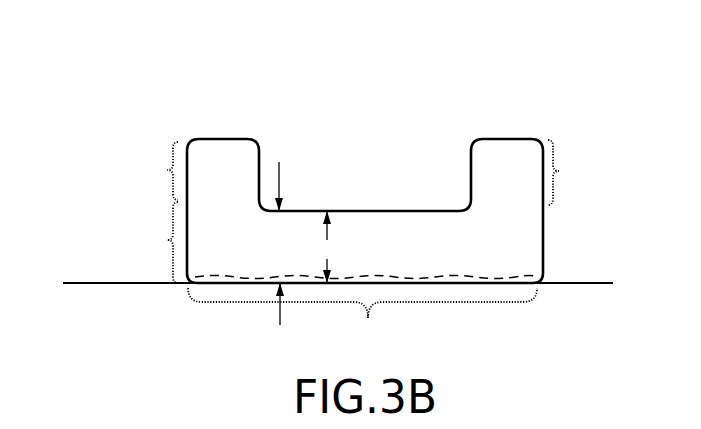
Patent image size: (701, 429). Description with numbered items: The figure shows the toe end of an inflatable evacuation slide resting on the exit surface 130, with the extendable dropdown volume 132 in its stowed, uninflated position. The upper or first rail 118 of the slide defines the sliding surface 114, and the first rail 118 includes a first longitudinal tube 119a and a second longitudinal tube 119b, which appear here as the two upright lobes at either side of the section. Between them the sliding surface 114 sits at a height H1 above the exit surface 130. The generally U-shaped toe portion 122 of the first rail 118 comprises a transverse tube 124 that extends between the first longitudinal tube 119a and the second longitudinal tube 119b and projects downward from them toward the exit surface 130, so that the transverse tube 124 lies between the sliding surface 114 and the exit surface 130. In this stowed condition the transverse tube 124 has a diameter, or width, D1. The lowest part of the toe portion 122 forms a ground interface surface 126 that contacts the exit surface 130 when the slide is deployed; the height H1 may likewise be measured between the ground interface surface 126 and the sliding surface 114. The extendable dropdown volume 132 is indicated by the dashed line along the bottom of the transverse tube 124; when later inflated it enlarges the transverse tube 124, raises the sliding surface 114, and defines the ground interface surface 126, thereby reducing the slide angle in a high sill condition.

The toe portion 122 is at (352, 199).
The exit surface 130 is at (80, 283).
The second longitudinal tube 119b is at (194, 206).
The first longitudinal tube 119a is at (571, 206).
The transverse tube 124 is at (335, 274).
The sliding surface 114 is at (354, 210).
The first rail 118 is at (471, 150).
The extendable dropdown volume 132 is at (448, 277).
The ground interface surface 126 is at (462, 283).
The height H1 is at (279, 177).
The diameter D1 is at (325, 247).